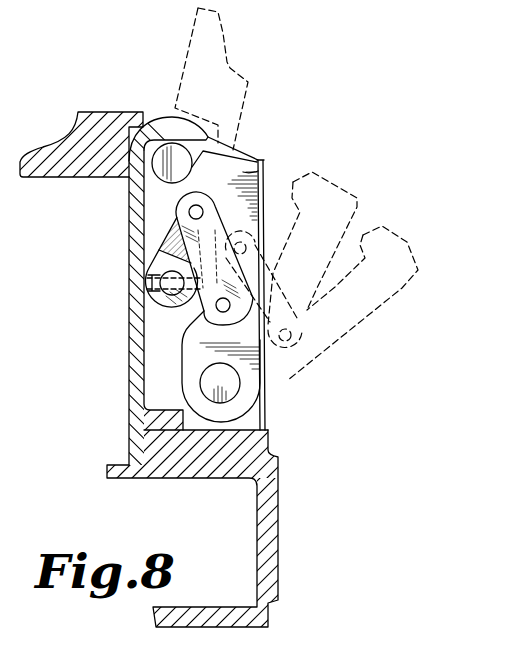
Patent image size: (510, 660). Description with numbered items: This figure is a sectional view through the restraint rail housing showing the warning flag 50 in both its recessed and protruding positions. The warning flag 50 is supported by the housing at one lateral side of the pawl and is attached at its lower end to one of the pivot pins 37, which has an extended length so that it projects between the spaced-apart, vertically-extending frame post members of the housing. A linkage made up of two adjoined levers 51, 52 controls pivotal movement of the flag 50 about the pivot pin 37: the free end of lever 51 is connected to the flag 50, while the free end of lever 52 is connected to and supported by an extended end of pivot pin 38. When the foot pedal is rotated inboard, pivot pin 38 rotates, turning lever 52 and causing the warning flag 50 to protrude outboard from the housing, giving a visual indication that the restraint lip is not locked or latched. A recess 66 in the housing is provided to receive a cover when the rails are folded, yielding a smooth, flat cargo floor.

The warning flag 50 is at (262, 165).
The lever 52 is at (167, 234).
The pivot pin 38 is at (152, 305).
The lever 51 is at (203, 295).
The pivot pin 37 is at (233, 394).
The recess 66 is at (274, 452).